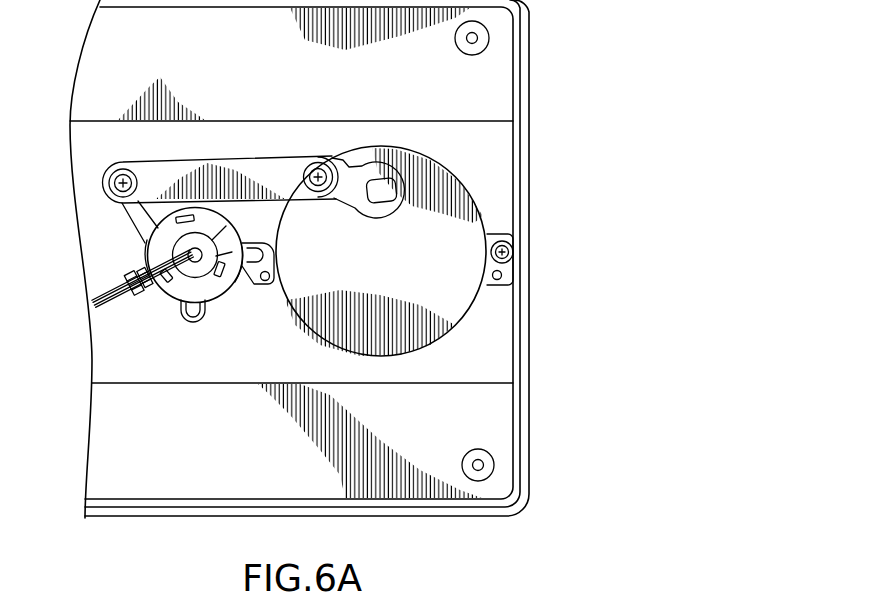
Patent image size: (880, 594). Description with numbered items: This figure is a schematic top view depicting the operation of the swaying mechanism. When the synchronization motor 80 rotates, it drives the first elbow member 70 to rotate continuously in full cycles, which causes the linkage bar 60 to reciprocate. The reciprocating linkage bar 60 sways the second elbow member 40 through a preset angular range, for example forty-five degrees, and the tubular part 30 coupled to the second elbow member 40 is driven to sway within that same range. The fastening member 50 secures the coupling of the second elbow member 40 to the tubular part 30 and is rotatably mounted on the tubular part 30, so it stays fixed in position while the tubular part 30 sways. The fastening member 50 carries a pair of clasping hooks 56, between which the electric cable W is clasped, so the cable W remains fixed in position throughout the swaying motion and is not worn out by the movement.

The electric cable W is at (108, 300).
The tubular part 30 is at (243, 270).
The second elbow member 40 is at (130, 215).
The fastening member 50 is at (175, 292).
The clasping hooks 56 is at (125, 270).
The linkage bar 60 is at (232, 172).
The first elbow member 70 is at (348, 167).
The synchronization motor 80 is at (473, 212).